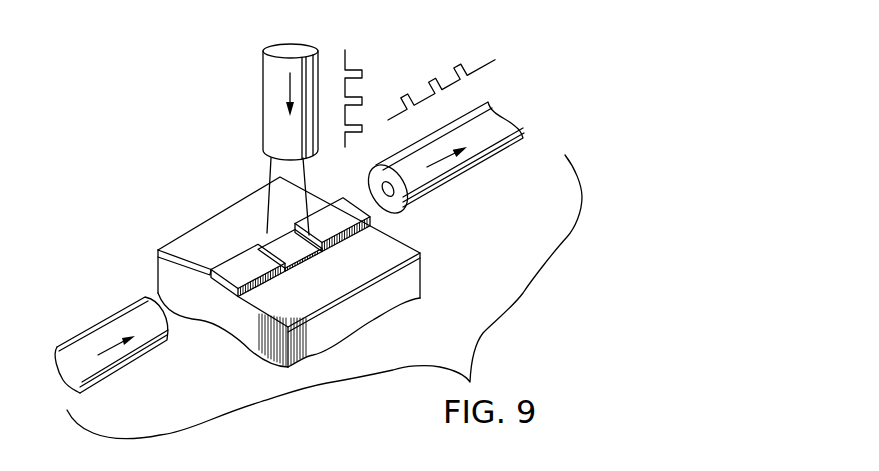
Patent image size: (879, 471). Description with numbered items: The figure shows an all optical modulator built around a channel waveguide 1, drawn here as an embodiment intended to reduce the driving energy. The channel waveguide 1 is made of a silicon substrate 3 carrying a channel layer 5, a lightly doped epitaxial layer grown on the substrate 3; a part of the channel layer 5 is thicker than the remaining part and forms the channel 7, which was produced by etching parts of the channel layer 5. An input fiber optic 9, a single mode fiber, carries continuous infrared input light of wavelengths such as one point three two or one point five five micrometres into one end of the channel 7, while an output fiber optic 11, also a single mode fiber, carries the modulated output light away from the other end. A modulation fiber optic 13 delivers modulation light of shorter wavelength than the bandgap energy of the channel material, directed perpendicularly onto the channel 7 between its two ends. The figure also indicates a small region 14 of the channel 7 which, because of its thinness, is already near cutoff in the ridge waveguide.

The channel waveguide 1 is at (191, 207).
The silicon substrate 3 is at (360, 317).
The channel layer 5 is at (412, 268).
The channel 7 is at (222, 292).
The input fiber optic 9 is at (145, 342).
The output fiber optic 11 is at (488, 146).
The modulation fiber optic 13 is at (277, 116).
The small region of the channel 14 is at (313, 258).